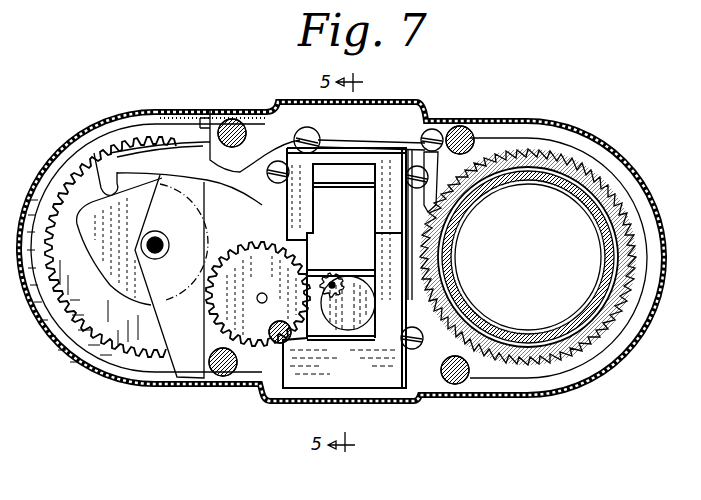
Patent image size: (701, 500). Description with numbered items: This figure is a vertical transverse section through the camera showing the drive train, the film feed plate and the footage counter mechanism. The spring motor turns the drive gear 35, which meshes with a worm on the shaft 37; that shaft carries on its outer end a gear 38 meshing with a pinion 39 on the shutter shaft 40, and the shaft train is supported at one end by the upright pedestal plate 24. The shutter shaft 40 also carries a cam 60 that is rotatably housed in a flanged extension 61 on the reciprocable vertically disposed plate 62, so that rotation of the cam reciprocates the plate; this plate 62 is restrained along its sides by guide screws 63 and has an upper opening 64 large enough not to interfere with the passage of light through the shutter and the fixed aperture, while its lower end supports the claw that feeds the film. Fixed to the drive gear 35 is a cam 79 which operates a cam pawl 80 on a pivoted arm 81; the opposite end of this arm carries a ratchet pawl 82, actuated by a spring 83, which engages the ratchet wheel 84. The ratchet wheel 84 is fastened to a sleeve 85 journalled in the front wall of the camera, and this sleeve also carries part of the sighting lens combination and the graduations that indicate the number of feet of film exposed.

The upright pedestal plate 24 is at (158, 258).
The drive gear 35 is at (135, 335).
The shaft 37 is at (263, 301).
The gear 38 is at (268, 340).
The pinion 39 is at (318, 272).
The shutter shaft 40 is at (338, 277).
The cam 60 is at (368, 303).
The flanged extension 61 is at (332, 340).
The reciprocable vertically disposed plate 62 is at (339, 268).
The screws 63 is at (270, 179).
The upper opening 64 is at (344, 203).
The cam 79 is at (93, 250).
The cam pawl 80 is at (103, 187).
The pivoted arm 81 is at (275, 112).
The ratchet pawl 82 is at (417, 195).
The spring 83 is at (428, 148).
The ratchet wheel 84 is at (582, 170).
The sleeve 85 is at (538, 175).